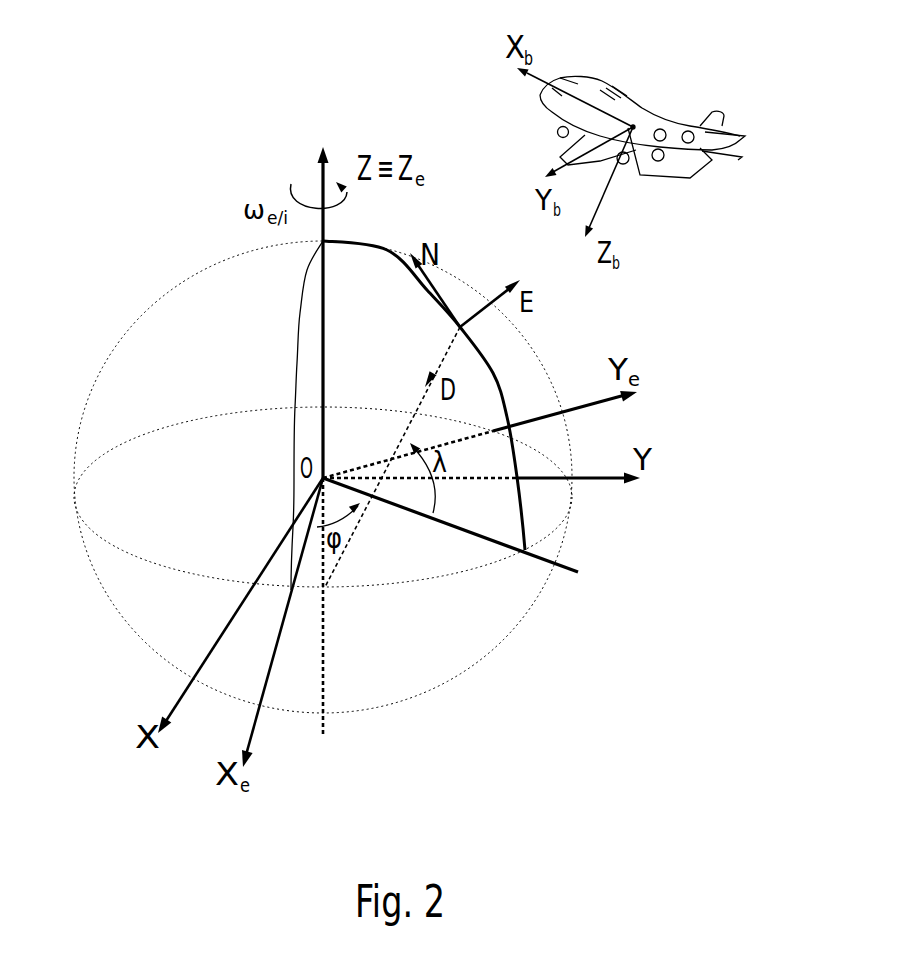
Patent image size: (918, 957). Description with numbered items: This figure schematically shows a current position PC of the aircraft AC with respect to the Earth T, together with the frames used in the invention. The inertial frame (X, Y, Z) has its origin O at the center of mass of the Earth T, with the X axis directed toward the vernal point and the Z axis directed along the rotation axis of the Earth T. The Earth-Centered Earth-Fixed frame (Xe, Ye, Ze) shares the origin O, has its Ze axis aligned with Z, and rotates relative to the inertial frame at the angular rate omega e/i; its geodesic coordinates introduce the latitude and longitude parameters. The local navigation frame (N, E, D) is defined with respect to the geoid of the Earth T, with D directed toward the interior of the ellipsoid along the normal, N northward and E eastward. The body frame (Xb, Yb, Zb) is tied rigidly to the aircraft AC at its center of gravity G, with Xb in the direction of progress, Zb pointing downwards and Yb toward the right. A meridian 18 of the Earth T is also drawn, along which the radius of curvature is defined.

The meridian 18 is at (300, 332).
The Earth T is at (92, 616).
The aircraft AC is at (687, 163).
The center of gravity G is at (634, 126).
The current position PC is at (645, 87).